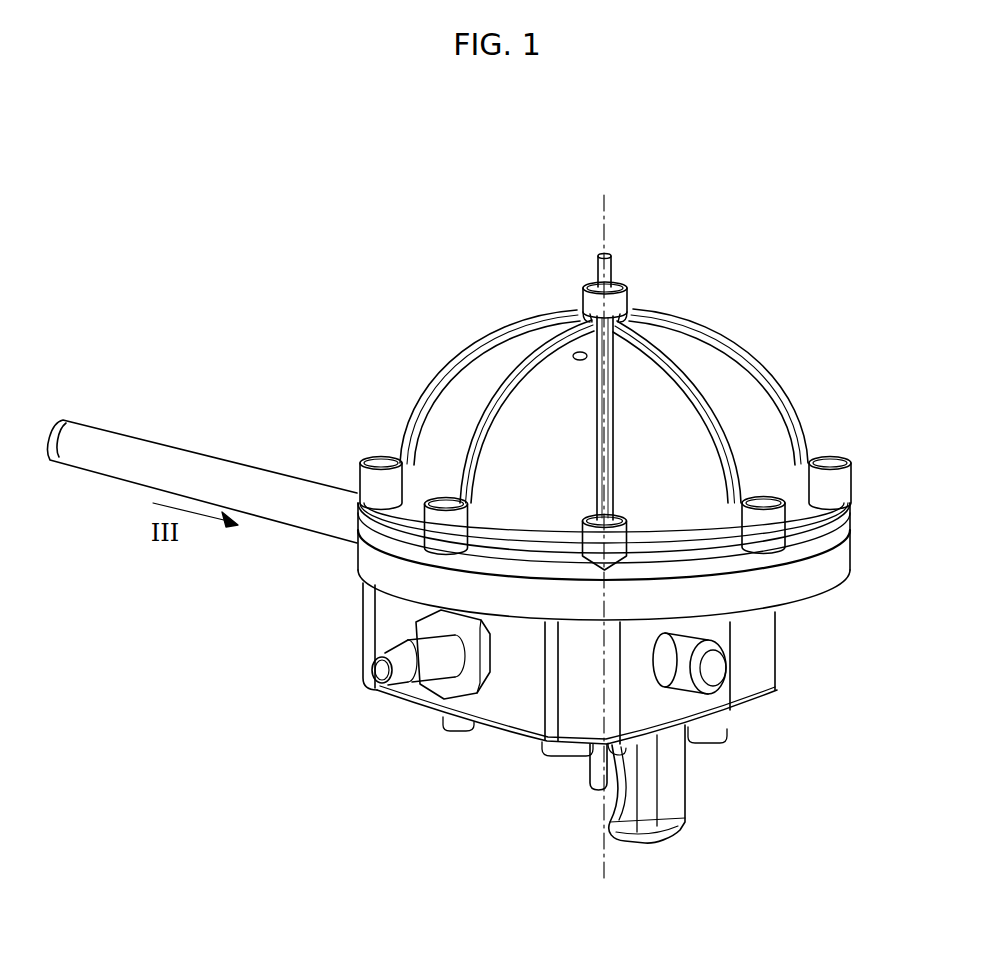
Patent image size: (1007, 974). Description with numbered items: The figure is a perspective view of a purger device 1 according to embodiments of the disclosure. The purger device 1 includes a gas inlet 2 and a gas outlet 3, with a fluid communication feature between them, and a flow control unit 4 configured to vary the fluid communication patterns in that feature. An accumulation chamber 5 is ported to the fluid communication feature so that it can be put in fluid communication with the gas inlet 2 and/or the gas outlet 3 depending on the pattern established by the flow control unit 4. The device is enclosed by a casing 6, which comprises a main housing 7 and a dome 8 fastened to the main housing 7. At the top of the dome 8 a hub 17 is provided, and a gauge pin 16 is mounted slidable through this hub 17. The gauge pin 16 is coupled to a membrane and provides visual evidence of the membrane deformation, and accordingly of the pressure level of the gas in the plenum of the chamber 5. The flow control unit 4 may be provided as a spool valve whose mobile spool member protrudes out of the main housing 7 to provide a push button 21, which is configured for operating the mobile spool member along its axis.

The purger device 1 is at (730, 195).
The gas inlet 2 is at (588, 772).
The gas outlet 3 is at (399, 684).
The flow control unit 4 is at (734, 667).
The accumulation chamber 5 is at (600, 416).
The casing 6 is at (788, 410).
The main housing 7 is at (358, 618).
The dome 8 is at (452, 365).
The gauge pin 16 is at (612, 272).
The hub 17 is at (590, 300).
The push button 21 is at (676, 686).